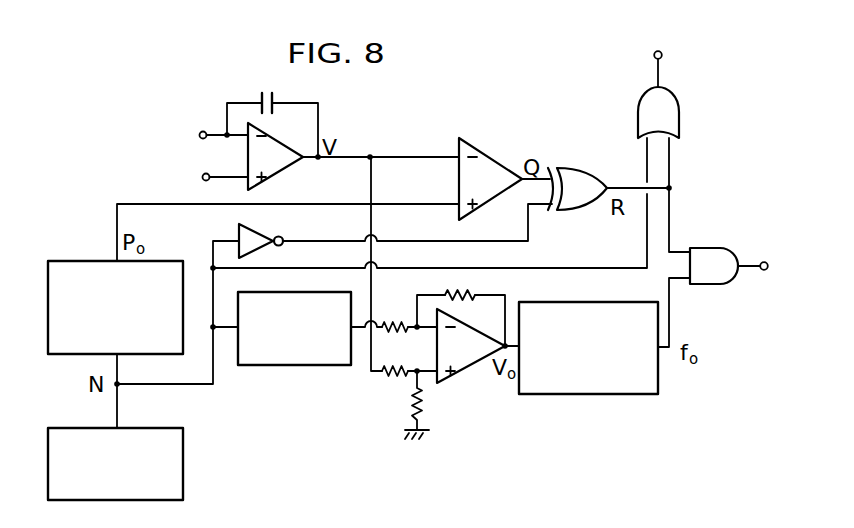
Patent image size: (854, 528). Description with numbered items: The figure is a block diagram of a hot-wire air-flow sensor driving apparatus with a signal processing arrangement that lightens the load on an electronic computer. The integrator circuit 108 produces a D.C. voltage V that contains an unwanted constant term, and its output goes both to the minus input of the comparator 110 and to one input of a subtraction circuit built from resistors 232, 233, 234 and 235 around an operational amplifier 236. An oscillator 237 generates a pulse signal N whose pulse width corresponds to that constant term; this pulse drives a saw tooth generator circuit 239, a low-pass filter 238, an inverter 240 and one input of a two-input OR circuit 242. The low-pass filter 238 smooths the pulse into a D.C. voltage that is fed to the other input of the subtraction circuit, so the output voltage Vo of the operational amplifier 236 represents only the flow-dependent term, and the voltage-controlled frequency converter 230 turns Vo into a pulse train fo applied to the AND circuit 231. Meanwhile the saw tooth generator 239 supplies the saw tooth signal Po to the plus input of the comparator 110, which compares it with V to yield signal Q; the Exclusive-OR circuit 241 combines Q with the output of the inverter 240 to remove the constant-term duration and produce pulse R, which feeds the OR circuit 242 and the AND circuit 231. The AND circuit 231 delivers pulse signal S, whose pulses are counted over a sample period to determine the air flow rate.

The integrator circuit 108 is at (282, 142).
The comparator 110 is at (488, 153).
The voltage-controlled frequency converter 230 is at (628, 395).
The AND circuit 231 is at (700, 247).
The resistor 232 is at (400, 320).
The resistor 233 is at (484, 282).
The resistor 234 is at (403, 379).
The resistor 235 is at (427, 405).
The operational amplifier 236 is at (474, 364).
The oscillator 237 is at (204, 482).
The low-pass filter 238 is at (305, 366).
The saw tooth generator circuit 239 is at (78, 260).
The inverter 240 is at (253, 229).
The Exclusive-OR circuit 241 is at (595, 177).
The OR circuit 242 is at (680, 125).